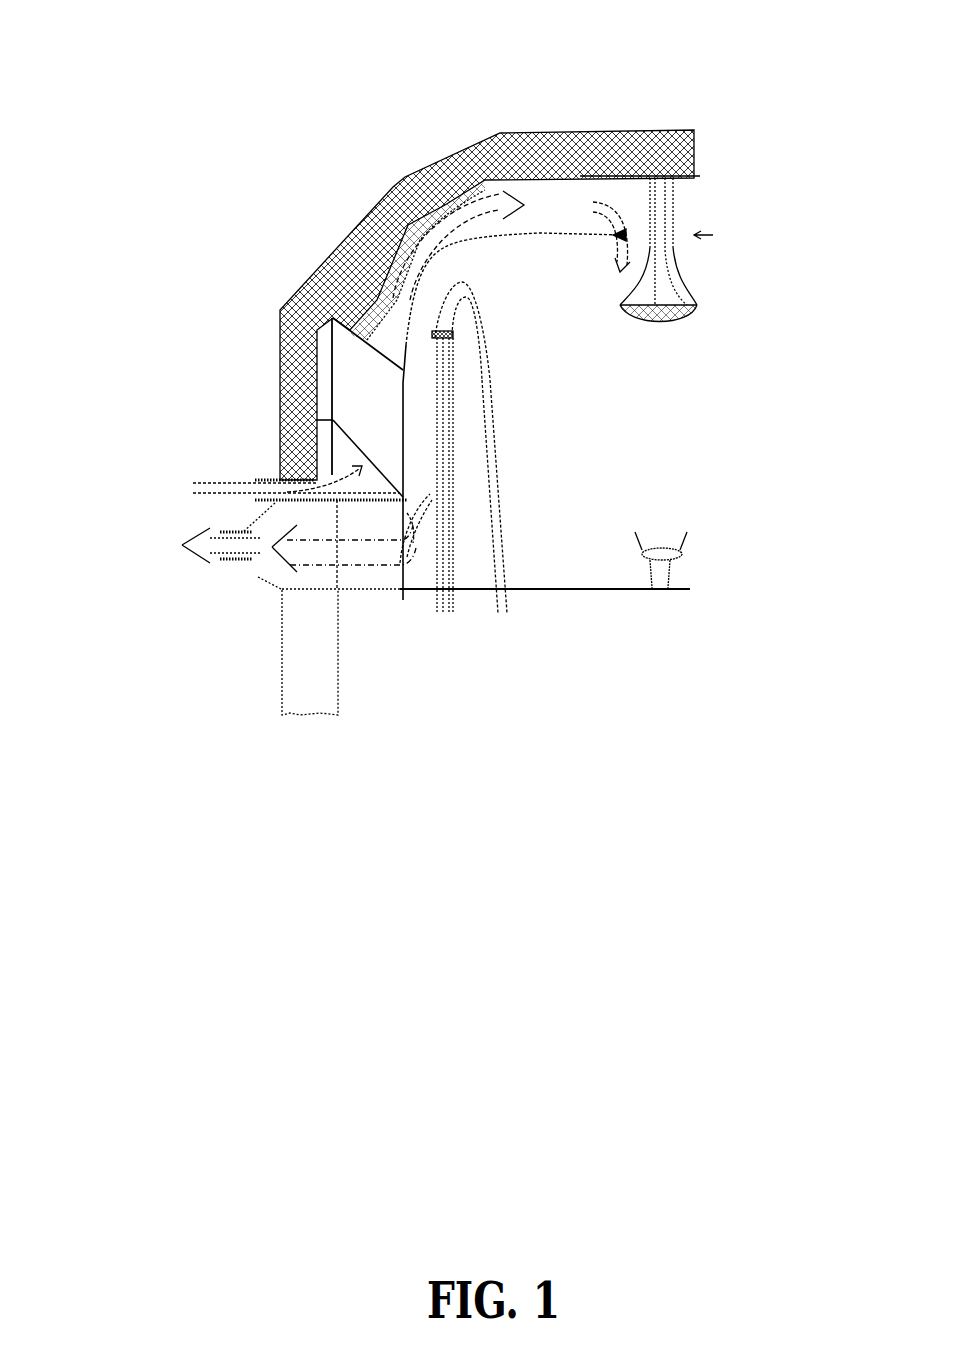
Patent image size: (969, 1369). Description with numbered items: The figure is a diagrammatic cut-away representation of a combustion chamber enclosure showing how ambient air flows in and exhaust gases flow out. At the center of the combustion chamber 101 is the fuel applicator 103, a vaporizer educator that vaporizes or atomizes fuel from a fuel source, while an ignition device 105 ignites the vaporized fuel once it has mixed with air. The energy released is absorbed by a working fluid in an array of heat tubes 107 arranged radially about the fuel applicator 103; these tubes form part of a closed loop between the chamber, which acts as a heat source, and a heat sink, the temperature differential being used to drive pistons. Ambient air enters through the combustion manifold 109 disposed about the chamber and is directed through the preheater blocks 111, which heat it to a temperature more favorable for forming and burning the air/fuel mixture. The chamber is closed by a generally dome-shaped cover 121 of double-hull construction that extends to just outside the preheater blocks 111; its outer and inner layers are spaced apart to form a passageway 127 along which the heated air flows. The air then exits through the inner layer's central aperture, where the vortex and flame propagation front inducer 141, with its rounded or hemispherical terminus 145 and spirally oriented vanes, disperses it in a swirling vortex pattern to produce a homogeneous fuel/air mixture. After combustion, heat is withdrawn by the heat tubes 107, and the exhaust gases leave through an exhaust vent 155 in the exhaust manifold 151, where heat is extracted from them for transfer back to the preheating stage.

The combustion chamber 101 is at (126, 66).
The fuel applicator 103 is at (678, 573).
The ignition device 105 is at (696, 532).
The heat tubes 107 is at (507, 436).
The combustion manifold 109 is at (272, 477).
The preheater blocks 111 is at (349, 400).
The cover 121 is at (350, 218).
The passageway 127 is at (578, 218).
The vortex and flame propagation front inducer 141 is at (599, 327).
The terminus 145 is at (692, 325).
The exhaust manifold 151 is at (259, 582).
The exhaust vent 155 is at (367, 594).